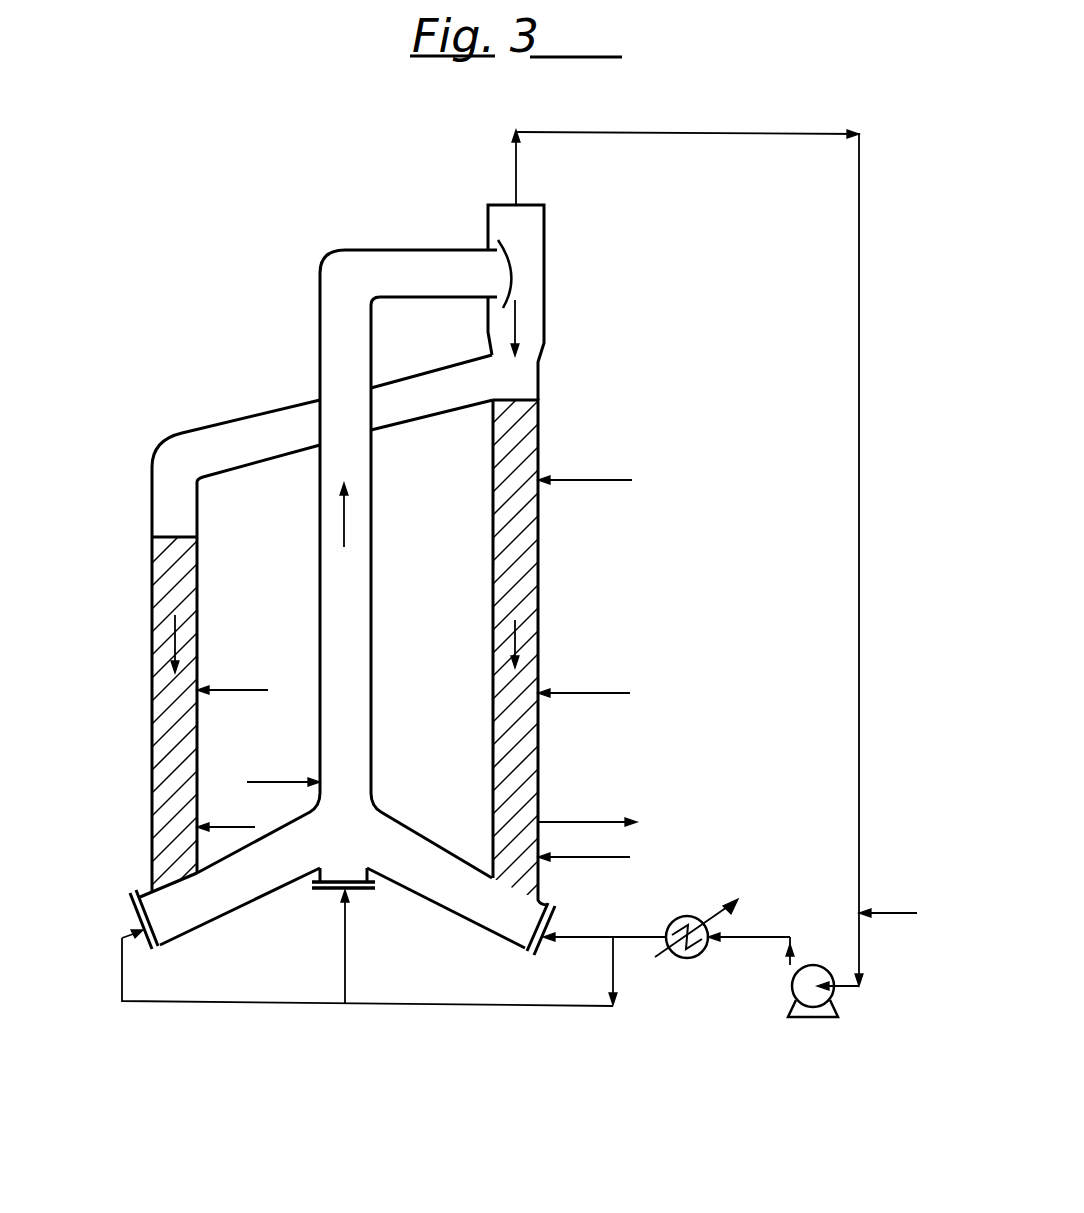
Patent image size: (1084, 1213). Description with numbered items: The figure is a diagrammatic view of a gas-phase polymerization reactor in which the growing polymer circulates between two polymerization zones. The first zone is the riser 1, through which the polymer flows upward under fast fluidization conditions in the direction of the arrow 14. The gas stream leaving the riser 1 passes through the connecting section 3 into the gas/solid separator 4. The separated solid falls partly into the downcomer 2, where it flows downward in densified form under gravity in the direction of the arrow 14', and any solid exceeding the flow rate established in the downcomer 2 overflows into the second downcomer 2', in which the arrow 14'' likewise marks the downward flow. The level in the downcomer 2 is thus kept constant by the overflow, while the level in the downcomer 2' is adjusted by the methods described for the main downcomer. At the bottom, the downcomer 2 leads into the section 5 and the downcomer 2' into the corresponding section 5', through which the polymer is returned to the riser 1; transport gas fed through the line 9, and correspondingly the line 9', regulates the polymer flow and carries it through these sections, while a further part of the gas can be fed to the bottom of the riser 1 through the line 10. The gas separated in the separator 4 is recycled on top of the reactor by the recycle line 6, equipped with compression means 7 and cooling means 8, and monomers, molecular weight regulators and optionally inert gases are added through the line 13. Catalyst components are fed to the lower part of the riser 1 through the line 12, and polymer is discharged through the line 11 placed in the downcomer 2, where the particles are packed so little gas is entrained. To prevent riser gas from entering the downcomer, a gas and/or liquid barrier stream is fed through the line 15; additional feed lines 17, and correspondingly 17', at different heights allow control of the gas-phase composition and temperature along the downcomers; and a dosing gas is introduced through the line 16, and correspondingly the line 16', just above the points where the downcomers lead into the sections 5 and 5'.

The riser 1 is at (373, 640).
The downcomer 2 is at (529, 654).
The downcomer 2' is at (164, 712).
The interconnecting section 3 is at (431, 250).
The gas/solid separator 4 is at (544, 230).
The interconnecting section 5 is at (461, 911).
The inclined discharge pipe 5' is at (225, 908).
The recycle line 6 is at (857, 425).
The means for compression 7 is at (813, 965).
The means for cooling 8 is at (690, 958).
The line 9 is at (668, 951).
The feed line 9' is at (362, 996).
The line 10 is at (346, 968).
The line 11 is at (590, 822).
The line 12 is at (285, 782).
The line 13 is at (898, 913).
The arrow 14 is at (382, 515).
The arrow 14' is at (556, 624).
The downward flow 14'' is at (138, 660).
The line 15 is at (595, 480).
The line 16 is at (610, 852).
The inlet flow 16' is at (246, 818).
The feed lines 17 is at (594, 677).
The inlet flow 17' is at (237, 662).